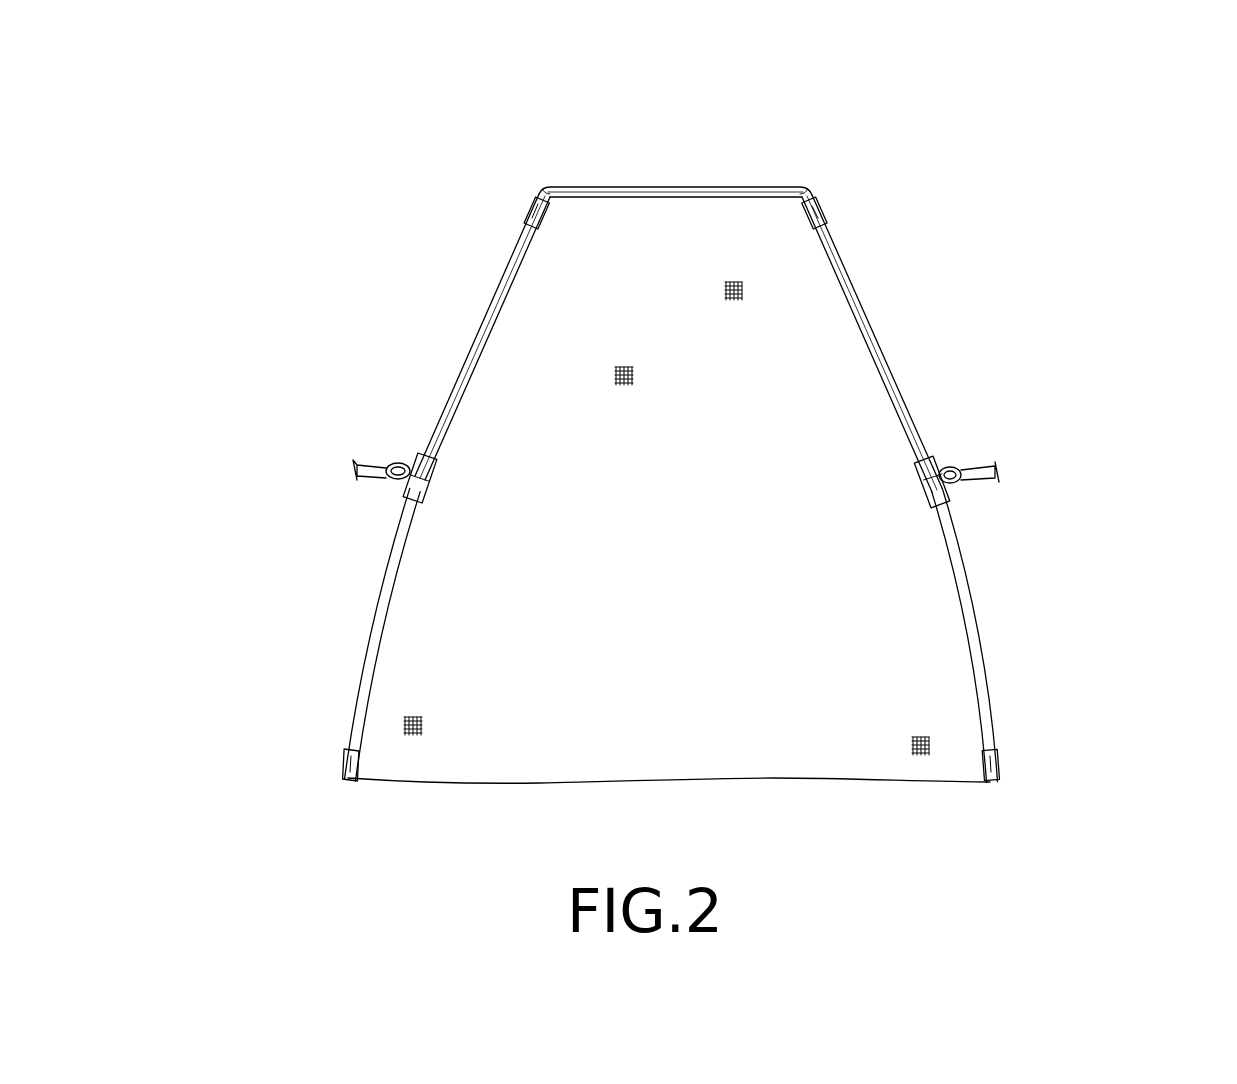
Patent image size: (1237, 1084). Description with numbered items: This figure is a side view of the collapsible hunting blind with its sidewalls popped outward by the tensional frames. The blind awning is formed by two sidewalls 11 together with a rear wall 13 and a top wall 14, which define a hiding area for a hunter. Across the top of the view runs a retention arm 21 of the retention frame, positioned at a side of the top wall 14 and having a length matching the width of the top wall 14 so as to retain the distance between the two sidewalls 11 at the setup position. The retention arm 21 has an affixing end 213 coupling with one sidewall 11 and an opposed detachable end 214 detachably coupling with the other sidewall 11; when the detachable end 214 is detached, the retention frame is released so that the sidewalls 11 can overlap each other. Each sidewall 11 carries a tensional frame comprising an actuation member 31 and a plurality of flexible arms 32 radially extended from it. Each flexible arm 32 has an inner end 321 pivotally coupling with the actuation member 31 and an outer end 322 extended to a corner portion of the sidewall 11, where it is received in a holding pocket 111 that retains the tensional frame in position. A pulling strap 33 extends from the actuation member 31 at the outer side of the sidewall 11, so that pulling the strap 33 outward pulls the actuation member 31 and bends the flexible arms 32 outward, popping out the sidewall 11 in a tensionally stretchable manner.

The sidewall 11 is at (352, 714).
The holding pocket 111 is at (534, 201).
The rear wall 13 is at (658, 563).
The top wall 14 is at (642, 187).
The retention arm 21 is at (699, 455).
The affixing end 213 is at (533, 180).
The detachable end 214 is at (802, 182).
The actuation member 31 is at (396, 464).
The flexible arm 32 is at (478, 343).
The inner end 321 is at (415, 446).
The outer end 322 is at (519, 216).
The pulling strap 33 is at (353, 476).